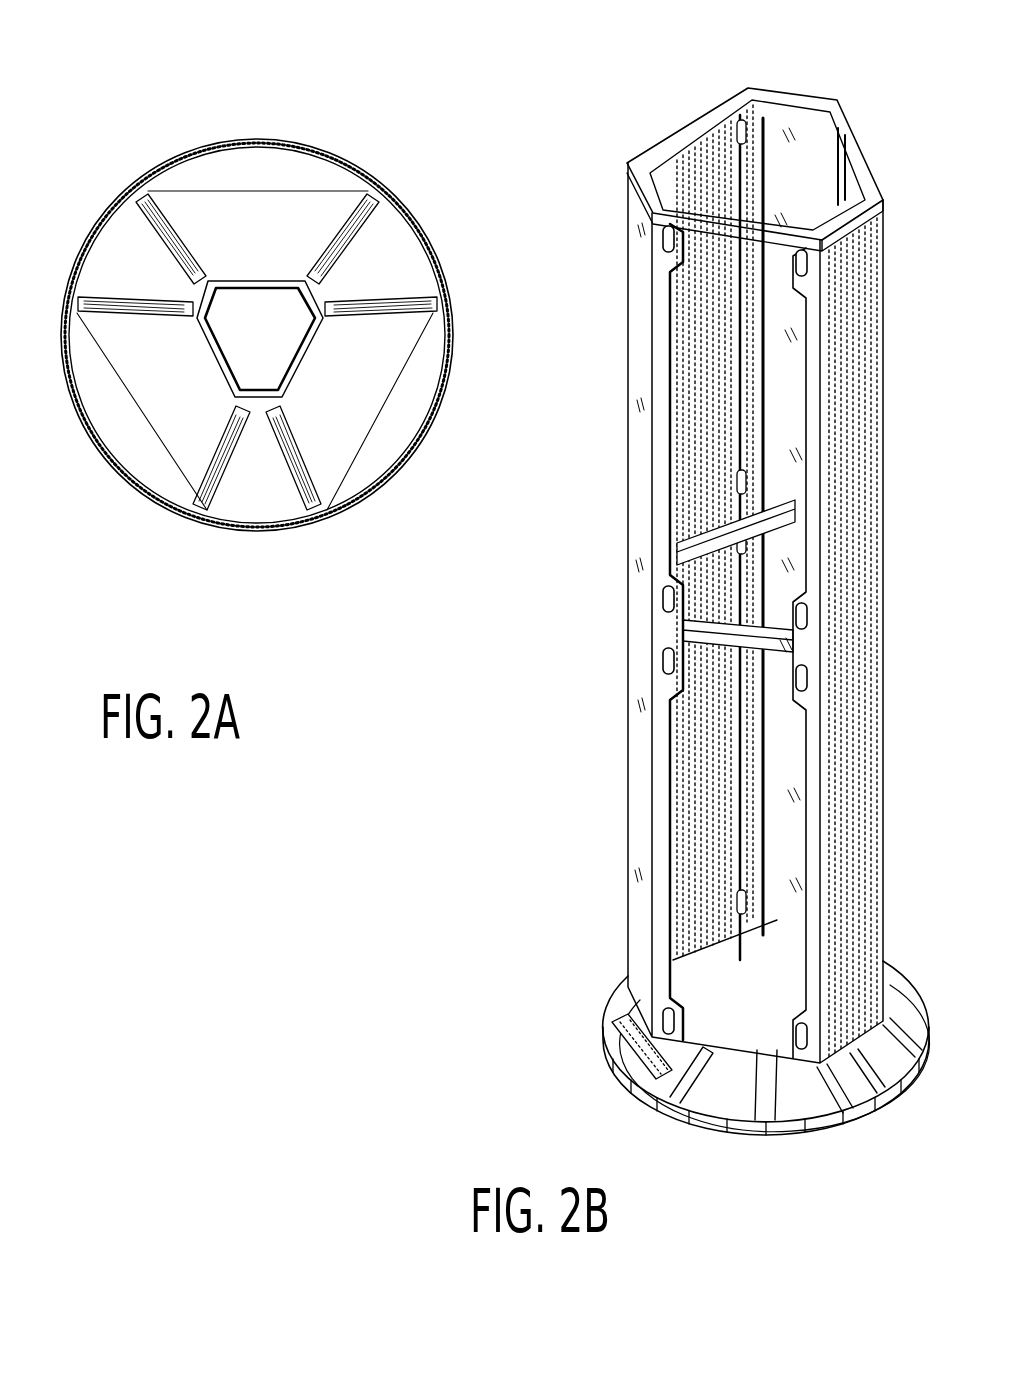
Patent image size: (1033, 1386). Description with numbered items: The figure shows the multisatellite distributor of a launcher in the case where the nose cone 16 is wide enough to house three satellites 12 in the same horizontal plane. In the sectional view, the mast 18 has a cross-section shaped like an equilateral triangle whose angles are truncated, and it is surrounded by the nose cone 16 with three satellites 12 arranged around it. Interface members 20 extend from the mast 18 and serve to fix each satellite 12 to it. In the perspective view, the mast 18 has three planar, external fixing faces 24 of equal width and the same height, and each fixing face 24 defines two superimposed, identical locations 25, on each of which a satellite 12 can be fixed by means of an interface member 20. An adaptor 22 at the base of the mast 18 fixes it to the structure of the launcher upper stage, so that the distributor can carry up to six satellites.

In FIG. 2A, the satellite 12 is at (173, 197).
In FIG. 2A, the nose cone 16 is at (332, 160).
In FIG. 2A, the mast 18 is at (262, 402).
In FIG. 2B, the mast 18 is at (773, 68).
In FIG. 2A, the interface member 20 is at (237, 278).
In FIG. 2B, the adaptor 22 is at (600, 996).
In FIG. 2B, the fixing face 24 is at (675, 133).
In FIG. 2B, the location 25 is at (660, 717).